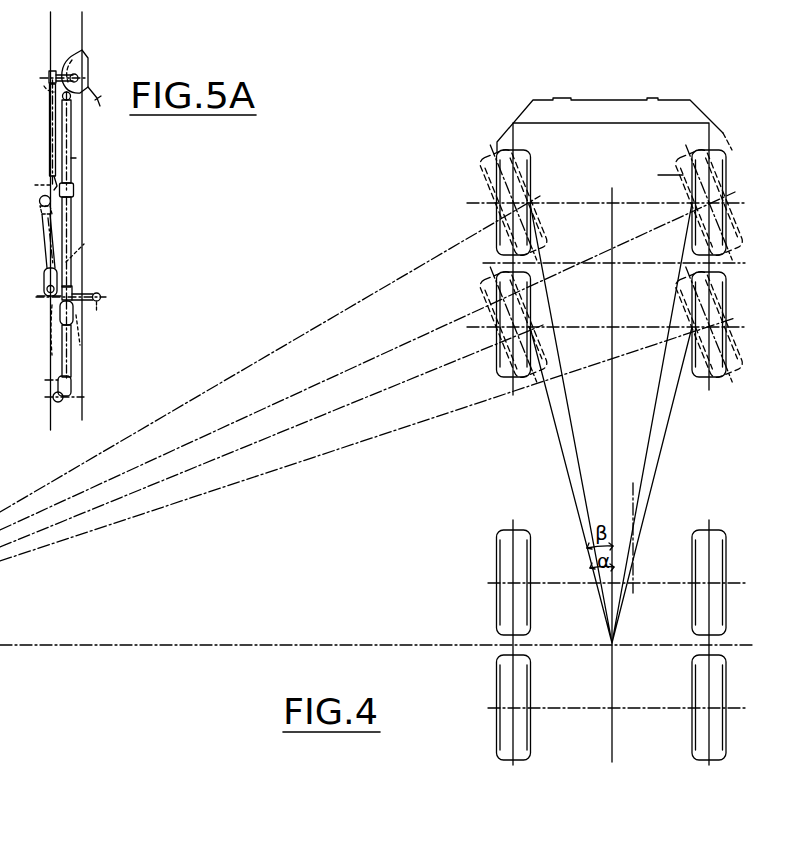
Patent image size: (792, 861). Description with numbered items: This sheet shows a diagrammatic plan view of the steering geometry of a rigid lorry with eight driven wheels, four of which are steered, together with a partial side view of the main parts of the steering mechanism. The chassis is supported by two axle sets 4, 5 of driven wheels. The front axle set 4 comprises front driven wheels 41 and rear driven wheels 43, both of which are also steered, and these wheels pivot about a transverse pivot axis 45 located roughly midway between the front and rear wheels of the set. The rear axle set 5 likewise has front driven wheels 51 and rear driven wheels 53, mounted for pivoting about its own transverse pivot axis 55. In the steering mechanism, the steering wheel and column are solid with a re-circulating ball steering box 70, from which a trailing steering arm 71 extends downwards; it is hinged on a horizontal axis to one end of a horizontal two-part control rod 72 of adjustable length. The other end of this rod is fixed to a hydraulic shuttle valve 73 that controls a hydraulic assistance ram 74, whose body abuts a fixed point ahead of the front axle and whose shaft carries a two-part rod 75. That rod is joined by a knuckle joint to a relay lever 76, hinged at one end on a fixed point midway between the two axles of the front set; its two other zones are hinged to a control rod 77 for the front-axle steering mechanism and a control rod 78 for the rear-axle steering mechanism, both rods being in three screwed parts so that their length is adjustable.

In FIG. 4, the front axle set 4 is at (742, 258).
In FIG. 4, the front driven wheels 41 is at (530, 177).
In FIG. 4, the rear driven wheels 43 is at (534, 300).
In FIG. 4, the pivot axis 45 is at (633, 262).
In FIG. 4, the rear axle set 5 is at (737, 641).
In FIG. 4, the front driven wheels 51 is at (524, 578).
In FIG. 4, the rear driven wheels 53 is at (523, 736).
In FIG. 4, the pivot axis 55 is at (650, 645).
In FIG. 5A, the re-circulating ball steering box 70 is at (79, 62).
In FIG. 5A, the trailing steering arm 71 is at (60, 72).
In FIG. 5A, the control rod 72 is at (50, 100).
In FIG. 5A, the hydraulic shuttle valve 73 is at (73, 189).
In FIG. 5A, the hydraulic assistance ram 74 is at (71, 137).
In FIG. 5A, the rod 75 is at (71, 234).
In FIG. 5A, the relay lever 76 is at (85, 290).
In FIG. 5A, the control rod 77 is at (47, 244).
In FIG. 5A, the control rod 78 is at (68, 358).